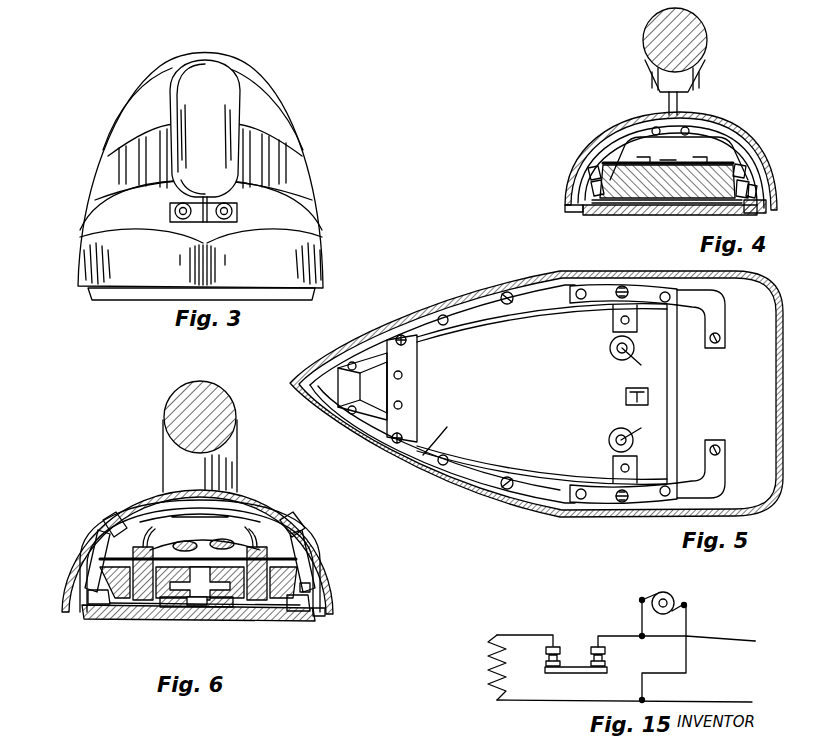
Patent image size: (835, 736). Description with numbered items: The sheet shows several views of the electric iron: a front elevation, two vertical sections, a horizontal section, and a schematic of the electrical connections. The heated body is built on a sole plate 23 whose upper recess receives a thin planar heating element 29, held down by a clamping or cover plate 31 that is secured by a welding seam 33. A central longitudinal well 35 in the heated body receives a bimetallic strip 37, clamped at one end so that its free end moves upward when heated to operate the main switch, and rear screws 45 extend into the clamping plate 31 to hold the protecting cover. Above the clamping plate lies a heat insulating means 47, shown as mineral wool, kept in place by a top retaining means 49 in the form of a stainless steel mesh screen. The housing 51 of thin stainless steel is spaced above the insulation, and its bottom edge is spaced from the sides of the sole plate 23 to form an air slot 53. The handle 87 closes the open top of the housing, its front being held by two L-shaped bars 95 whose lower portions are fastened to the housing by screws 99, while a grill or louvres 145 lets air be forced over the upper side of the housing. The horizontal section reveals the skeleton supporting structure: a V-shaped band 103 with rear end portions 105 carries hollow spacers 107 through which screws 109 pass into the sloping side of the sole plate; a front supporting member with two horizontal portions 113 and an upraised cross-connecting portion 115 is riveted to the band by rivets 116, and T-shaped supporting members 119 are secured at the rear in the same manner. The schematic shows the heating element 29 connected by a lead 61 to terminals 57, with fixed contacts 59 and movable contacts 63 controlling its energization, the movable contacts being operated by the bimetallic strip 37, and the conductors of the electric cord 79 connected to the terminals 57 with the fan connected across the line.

In FIG. 3, the sole plate 23 is at (100, 292).
In FIG. 4, the sole plate 23 is at (598, 212).
In FIG. 5, the sole plate 23 is at (322, 382).
In FIG. 6, the sole plate 23 is at (88, 615).
In FIG. 4, the heating element 29 is at (650, 208).
In FIG. 6, the heating element 29 is at (248, 614).
In FIG. 15, the heating element 29 is at (490, 672).
In FIG. 4, the clamping or cover plate 31 is at (628, 205).
In FIG. 6, the clamping or cover plate 31 is at (281, 615).
In FIG. 4, the welding seam 33 is at (745, 215).
In FIG. 6, the central longitudinal well 35 is at (198, 608).
In FIG. 5, the bimetallic strip 37 is at (626, 395).
In FIG. 6, the rear screws 45 is at (155, 602).
In FIG. 4, the heat insulating means 47 is at (692, 196).
In FIG. 4, the top holding or retaining means 49 is at (664, 160).
In FIG. 5, the top holding or retaining means 49 is at (432, 462).
In FIG. 6, the top holding or retaining means 49 is at (187, 547).
In FIG. 3, the housing 51 is at (318, 233).
In FIG. 4, the housing 51 is at (736, 125).
In FIG. 5, the housing 51 is at (370, 330).
In FIG. 6, the housing 51 is at (264, 503).
In FIG. 4, the air passage or slot 53 is at (566, 207).
In FIG. 6, the air passage or slot 53 is at (314, 615).
In FIG. 15, the electric terminals 57 is at (642, 636).
In FIG. 15, the fixed switch contacts 59 is at (592, 656).
In FIG. 5, the lead 61 is at (636, 432).
In FIG. 6, the lead 61 is at (243, 547).
In FIG. 15, the lead 61 is at (537, 640).
In FIG. 15, the movable contacts 63 is at (545, 669).
In FIG. 15, the electric cord 79 is at (752, 700).
In FIG. 3, the handle 87 is at (226, 93).
In FIG. 4, the handle 87 is at (647, 35).
In FIG. 6, the handle 87 is at (238, 423).
In FIG. 3, the complementary L-shaped bars 95 is at (212, 208).
In FIG. 4, the complementary L-shaped bars 95 is at (678, 104).
In FIG. 3, the screws 99 is at (178, 212).
In FIG. 5, the V-shaped strip or band 103 is at (447, 468).
In FIG. 6, the V-shaped strip or band 103 is at (305, 588).
In FIG. 5, the rear end portions 105 is at (722, 465).
In FIG. 4, the spacers 107 is at (752, 187).
In FIG. 5, the screws 109 is at (508, 492).
In FIG. 6, the screws 109 is at (80, 590).
In FIG. 4, the horizontally extending portions 113 is at (746, 163).
In FIG. 5, the horizontally extending portions 113 is at (352, 433).
In FIG. 4, the upraised cross-connecting portion 115 is at (630, 138).
In FIG. 5, the upraised cross-connecting portion 115 is at (414, 392).
In FIG. 4, the rivets 116 is at (590, 170).
In FIG. 5, the T-shaped supporting members 119 is at (650, 298).
In FIG. 6, the T-shaped supporting members 119 is at (78, 540).
In FIG. 3, the grill or louvres 145 is at (278, 176).